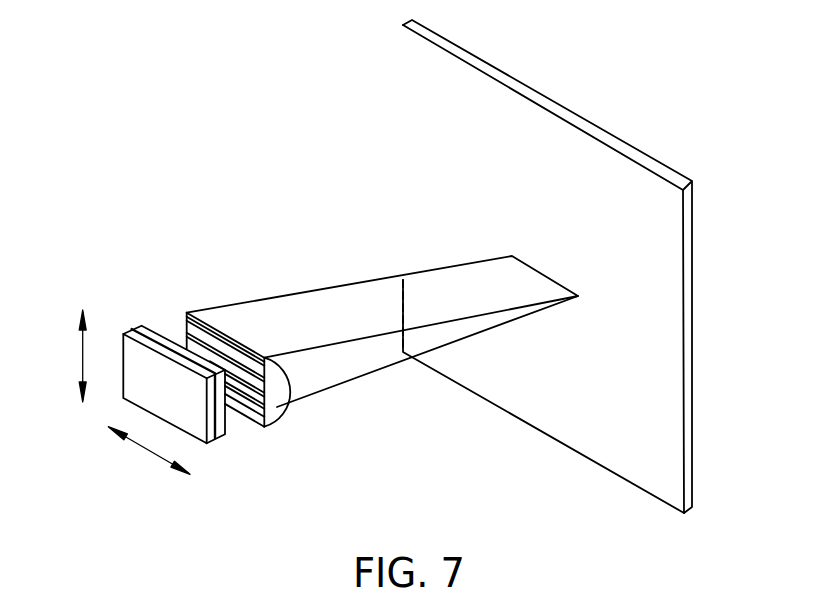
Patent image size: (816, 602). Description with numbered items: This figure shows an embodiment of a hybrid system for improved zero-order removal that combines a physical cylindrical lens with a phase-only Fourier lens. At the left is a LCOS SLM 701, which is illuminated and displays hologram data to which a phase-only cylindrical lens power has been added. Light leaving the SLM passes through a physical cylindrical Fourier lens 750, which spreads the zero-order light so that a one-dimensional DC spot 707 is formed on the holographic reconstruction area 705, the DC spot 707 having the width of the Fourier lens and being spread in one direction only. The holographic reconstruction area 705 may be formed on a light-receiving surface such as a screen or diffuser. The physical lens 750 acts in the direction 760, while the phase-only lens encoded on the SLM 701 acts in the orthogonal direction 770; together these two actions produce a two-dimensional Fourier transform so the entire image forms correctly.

The LCOS SLM 701 is at (188, 408).
The holographic reconstruction area 705 is at (562, 168).
The DC spot 707 is at (568, 282).
The cylindrical Fourier lens 750 is at (269, 393).
The direction of the physical lens 760 is at (57, 356).
The direction of the phase-only lens 770 is at (145, 462).